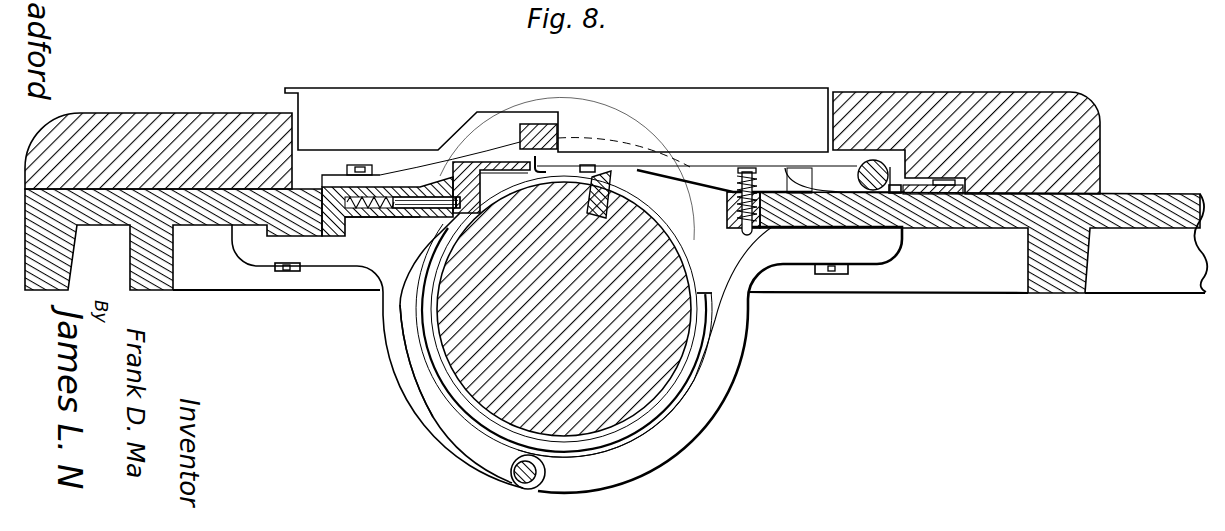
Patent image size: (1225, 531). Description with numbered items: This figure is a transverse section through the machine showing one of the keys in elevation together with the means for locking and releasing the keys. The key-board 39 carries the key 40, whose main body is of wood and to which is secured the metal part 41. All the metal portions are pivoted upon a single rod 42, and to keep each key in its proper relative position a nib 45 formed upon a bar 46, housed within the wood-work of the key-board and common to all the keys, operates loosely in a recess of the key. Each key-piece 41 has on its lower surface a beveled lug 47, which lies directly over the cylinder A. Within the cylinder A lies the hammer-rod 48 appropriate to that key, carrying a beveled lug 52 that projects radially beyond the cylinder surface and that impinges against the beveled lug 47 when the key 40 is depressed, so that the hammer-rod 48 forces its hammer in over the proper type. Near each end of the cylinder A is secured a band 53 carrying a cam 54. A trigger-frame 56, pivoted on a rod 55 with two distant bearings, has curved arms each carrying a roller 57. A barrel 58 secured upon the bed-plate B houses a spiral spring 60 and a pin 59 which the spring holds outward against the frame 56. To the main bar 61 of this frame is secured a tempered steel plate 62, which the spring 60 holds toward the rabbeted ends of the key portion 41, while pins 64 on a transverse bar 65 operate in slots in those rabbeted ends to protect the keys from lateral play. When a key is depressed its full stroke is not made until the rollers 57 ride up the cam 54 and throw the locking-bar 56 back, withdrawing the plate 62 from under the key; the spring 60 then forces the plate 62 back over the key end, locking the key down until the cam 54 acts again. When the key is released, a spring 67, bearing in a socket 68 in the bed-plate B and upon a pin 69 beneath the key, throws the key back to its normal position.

The key-board 39 is at (966, 131).
The key 40 is at (556, 120).
The metal part of key 41 is at (751, 171).
The rod 42 is at (866, 170).
The nib 45 is at (901, 198).
The bar 46 is at (943, 194).
The beveled lug 47 is at (601, 196).
The hammer-rod 48 is at (607, 205).
The beveled lug of hammer-rod 52 is at (613, 188).
The band 53 is at (668, 403).
The cam 54 is at (430, 323).
The rod 55 is at (518, 485).
The trigger-frame 56 is at (428, 412).
The roller 57 is at (413, 247).
The barrel 58 is at (371, 220).
The pin 59 is at (415, 217).
The spiral spring 60 is at (352, 197).
The main bar 61 is at (491, 178).
The plate 62 is at (501, 166).
The pin 64 is at (565, 171).
The transverse bar 65 is at (541, 124).
The spring 67 is at (758, 190).
The socket 68 is at (728, 207).
The pin 69 is at (747, 168).
The cylinder A is at (564, 309).
The bed-plate B is at (946, 298).